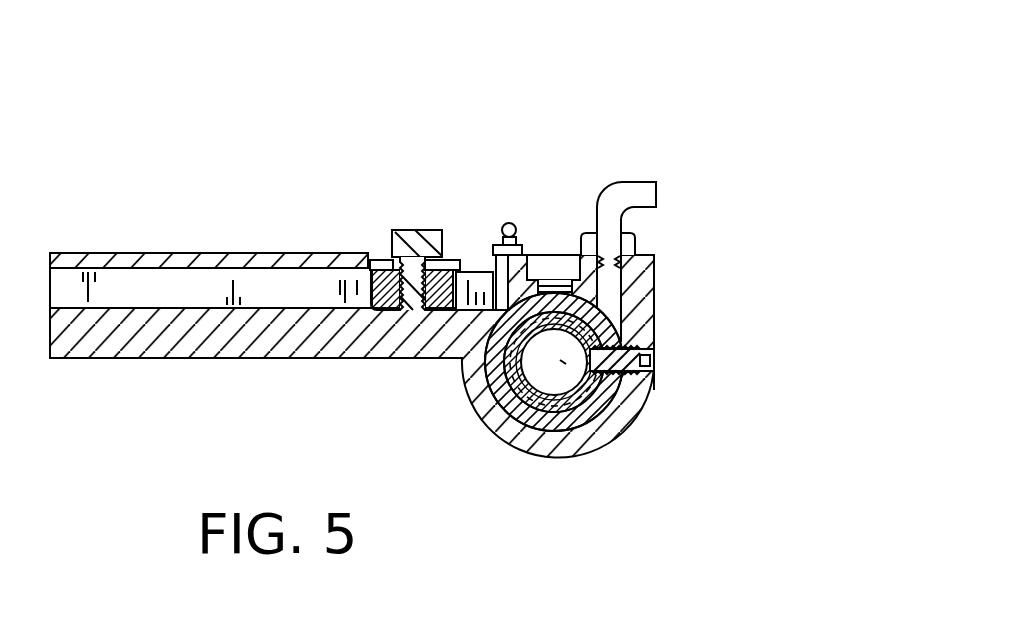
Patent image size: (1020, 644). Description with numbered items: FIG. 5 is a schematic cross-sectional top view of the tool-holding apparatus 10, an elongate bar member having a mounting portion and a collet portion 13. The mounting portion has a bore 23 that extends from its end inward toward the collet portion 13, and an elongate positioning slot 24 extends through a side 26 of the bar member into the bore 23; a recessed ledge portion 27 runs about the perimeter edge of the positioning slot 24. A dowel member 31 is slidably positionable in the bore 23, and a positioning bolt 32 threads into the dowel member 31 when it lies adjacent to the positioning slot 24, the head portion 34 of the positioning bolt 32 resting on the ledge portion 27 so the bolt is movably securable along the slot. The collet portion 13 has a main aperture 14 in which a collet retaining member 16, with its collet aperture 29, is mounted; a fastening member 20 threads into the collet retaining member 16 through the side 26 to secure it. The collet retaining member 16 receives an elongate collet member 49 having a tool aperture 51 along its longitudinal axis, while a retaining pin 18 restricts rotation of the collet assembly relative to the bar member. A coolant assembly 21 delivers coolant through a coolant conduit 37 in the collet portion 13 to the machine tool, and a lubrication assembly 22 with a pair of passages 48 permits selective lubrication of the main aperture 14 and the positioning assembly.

The hinge assembly 10 is at (140, 97).
The collet portion 13 is at (607, 445).
The main aperture 14 is at (616, 393).
The collet retaining member 16 is at (580, 413).
The retaining pin 18 is at (656, 359).
The fastening member 20 is at (552, 263).
The coolant assembly 21 is at (647, 250).
The lubrication assembly 22 is at (544, 231).
The bore 23 is at (157, 288).
The positioning slot 24 is at (443, 267).
The side 26 is at (283, 253).
The ledge portion 27 is at (479, 262).
The collet aperture 29 is at (503, 405).
The dowel member 31 is at (370, 293).
The positioning bolt 32 is at (420, 307).
The head portion 34 is at (415, 230).
The coolant conduit 37 is at (608, 298).
The passages 48 is at (485, 263).
The collet member 49 is at (497, 341).
The tool aperture 51 is at (557, 361).